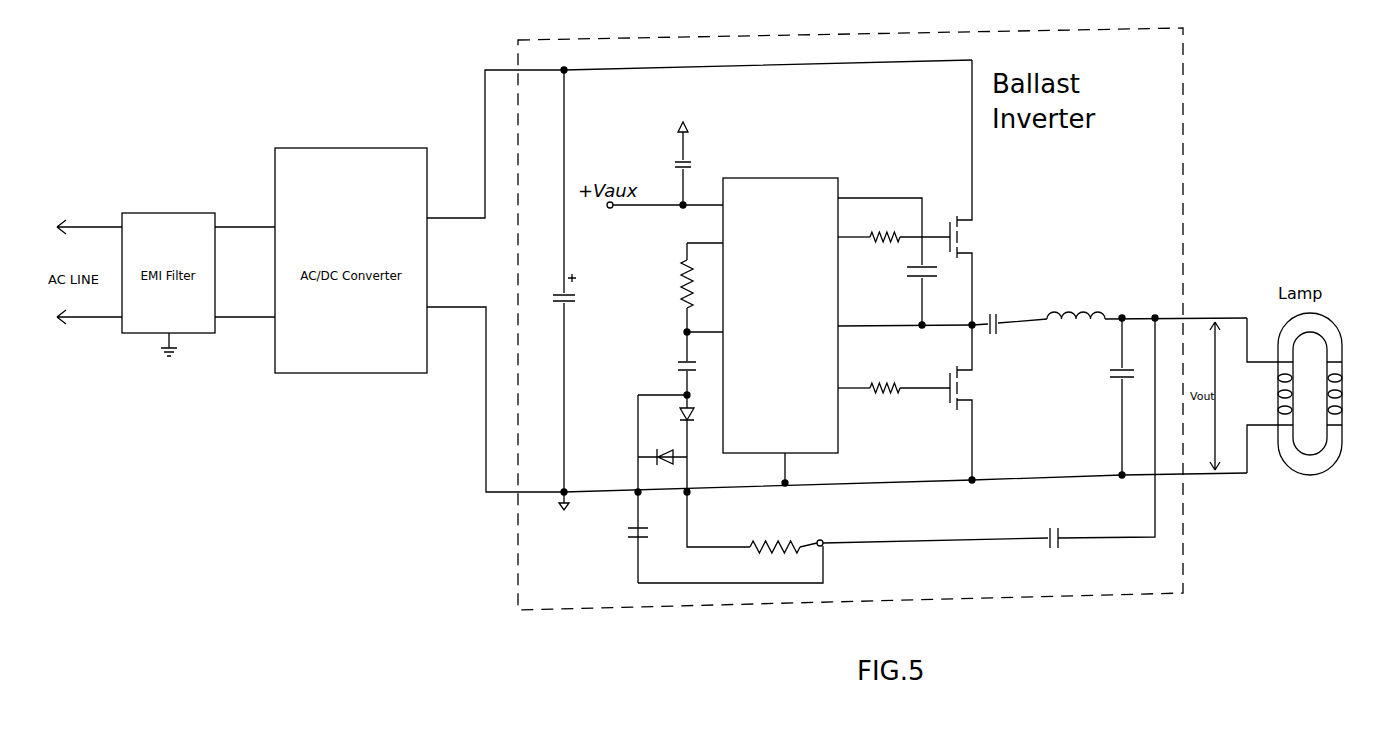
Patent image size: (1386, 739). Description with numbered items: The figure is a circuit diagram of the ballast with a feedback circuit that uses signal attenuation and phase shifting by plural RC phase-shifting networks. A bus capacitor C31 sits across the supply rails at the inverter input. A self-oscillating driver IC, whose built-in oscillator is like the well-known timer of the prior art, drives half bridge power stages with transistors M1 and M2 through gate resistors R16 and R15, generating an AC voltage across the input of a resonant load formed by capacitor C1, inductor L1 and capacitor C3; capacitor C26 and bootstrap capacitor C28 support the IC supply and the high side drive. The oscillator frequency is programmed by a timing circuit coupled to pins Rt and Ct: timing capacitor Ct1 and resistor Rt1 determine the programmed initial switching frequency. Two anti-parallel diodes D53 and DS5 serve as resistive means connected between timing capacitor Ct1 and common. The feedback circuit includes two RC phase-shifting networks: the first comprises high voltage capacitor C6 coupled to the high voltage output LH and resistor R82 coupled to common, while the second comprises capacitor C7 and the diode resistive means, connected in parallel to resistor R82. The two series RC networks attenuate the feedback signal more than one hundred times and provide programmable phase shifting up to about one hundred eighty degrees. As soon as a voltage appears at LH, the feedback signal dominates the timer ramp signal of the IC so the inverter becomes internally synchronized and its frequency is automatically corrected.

The bus capacitor C31 is at (548, 290).
The capacitor C26 is at (689, 166).
The self-oscillating driver IC is at (793, 178).
The resistor Rt1 is at (680, 290).
The timing capacitor Ct1 is at (672, 372).
The anti-parallel diode D53 is at (675, 420).
The anti-parallel diode DS5 is at (645, 460).
The capacitor C7 is at (623, 540).
The resistor R82 is at (752, 522).
The capacitor C6 is at (989, 447).
The capacitor C28 is at (912, 283).
The resistor R16 is at (880, 245).
The transistor M1 is at (979, 192).
The resistor R15 is at (885, 380).
The transistor M2 is at (979, 402).
The DC blocking capacitor C1 is at (1009, 311).
The resonant inductor L1 is at (1076, 301).
The high voltage output LH is at (1146, 304).
The resonant capacitor C3 is at (1108, 396).